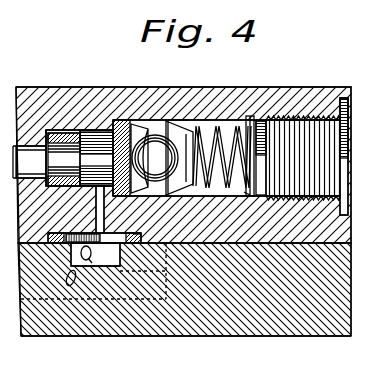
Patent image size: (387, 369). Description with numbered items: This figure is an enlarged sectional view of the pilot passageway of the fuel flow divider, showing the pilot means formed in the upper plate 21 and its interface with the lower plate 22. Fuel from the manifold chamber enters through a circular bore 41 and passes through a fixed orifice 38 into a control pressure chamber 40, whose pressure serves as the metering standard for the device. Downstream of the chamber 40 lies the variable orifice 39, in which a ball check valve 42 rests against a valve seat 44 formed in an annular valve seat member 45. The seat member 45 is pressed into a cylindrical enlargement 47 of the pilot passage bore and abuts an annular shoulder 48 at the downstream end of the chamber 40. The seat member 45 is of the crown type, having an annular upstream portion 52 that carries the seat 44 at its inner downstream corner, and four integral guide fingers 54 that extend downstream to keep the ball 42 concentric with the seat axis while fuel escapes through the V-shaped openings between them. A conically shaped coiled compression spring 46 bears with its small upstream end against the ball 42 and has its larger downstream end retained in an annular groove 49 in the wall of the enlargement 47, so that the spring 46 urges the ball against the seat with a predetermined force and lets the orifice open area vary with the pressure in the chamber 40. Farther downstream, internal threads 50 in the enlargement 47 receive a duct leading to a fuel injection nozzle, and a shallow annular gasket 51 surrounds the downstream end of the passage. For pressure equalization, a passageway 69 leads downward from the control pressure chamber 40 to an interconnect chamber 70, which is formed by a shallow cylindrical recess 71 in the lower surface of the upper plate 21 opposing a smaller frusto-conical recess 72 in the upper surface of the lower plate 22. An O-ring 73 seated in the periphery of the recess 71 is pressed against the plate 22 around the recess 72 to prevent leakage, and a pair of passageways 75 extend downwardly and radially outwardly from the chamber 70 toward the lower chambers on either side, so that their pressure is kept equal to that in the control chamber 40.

The upper plate 21 is at (164, 114).
The lower plate 22 is at (210, 318).
The fixed orifice 38 is at (55, 132).
The variable orifice 39 is at (173, 118).
The control pressure chamber 40 is at (66, 163).
The circular bore 41 is at (20, 150).
The ball check valve 42 is at (152, 148).
The valve seat 44 is at (130, 119).
The annular valve seat member 45 is at (118, 117).
The conically shaped coiled compression spring 46 is at (221, 117).
The cylindrical enlargement of the pilot passage bore 47 is at (207, 117).
The annular shoulder 48 is at (78, 152).
The annular groove 49 is at (238, 186).
The internal threads 50 is at (301, 110).
The shallow annular gasket 51 is at (340, 200).
The annular upstream portion 52 is at (93, 238).
The guide extensions or fingers 54 is at (152, 164).
The passageway 69 is at (93, 201).
The interconnect chamber 70 is at (110, 237).
The shallow cylindrical recess 71 is at (97, 259).
The frusto-conical recess 72 is at (65, 243).
The O-ring 73 is at (130, 227).
The passageways 75 is at (81, 251).